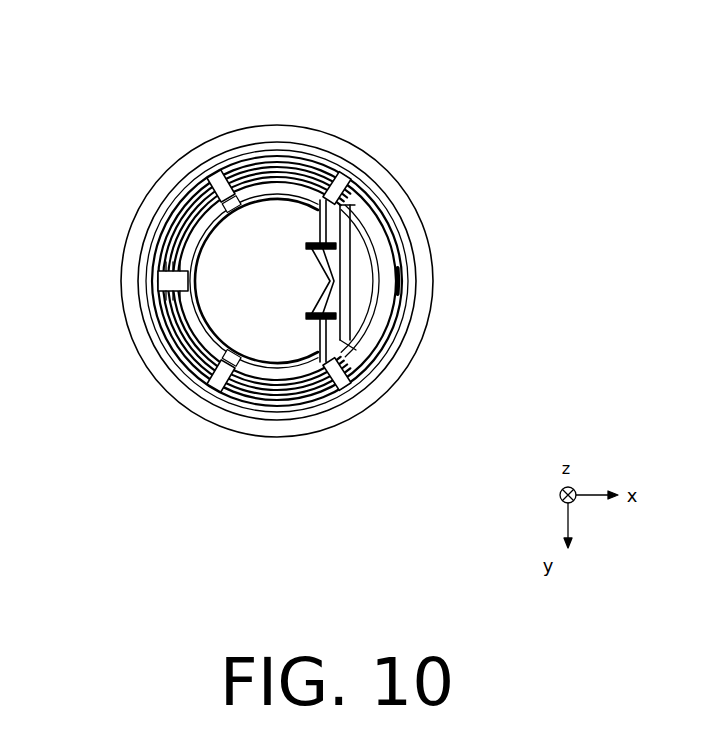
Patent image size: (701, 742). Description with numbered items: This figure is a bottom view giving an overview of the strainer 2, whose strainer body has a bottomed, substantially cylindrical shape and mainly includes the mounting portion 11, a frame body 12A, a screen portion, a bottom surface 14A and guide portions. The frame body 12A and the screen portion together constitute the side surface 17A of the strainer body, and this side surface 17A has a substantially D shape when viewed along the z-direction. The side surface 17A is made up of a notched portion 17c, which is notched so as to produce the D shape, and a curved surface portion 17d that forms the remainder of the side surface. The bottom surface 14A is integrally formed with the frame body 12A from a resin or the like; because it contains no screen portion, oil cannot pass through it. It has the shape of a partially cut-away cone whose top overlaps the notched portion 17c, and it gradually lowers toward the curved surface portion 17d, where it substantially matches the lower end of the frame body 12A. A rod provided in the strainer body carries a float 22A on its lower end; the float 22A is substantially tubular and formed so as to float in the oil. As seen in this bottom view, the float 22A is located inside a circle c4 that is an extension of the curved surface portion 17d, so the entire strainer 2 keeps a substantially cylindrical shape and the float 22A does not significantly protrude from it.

The strainer 2 is at (478, 93).
The mounting portion 11 is at (183, 162).
The frame body 12A is at (165, 284).
The bottom surface 14A is at (277, 283).
The side surface 17A is at (285, 48).
The notched portion 17c is at (364, 172).
The curved surface portion 17d is at (291, 165).
The float 22A is at (386, 286).
The circle c4 is at (385, 210).